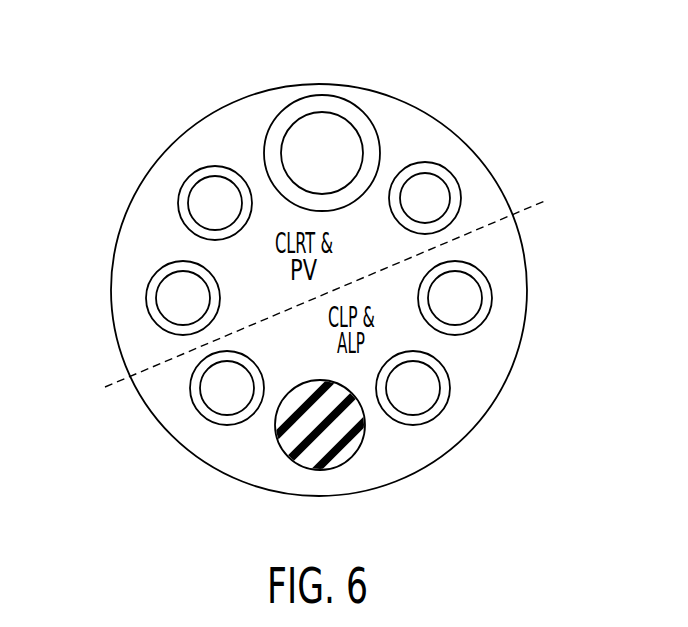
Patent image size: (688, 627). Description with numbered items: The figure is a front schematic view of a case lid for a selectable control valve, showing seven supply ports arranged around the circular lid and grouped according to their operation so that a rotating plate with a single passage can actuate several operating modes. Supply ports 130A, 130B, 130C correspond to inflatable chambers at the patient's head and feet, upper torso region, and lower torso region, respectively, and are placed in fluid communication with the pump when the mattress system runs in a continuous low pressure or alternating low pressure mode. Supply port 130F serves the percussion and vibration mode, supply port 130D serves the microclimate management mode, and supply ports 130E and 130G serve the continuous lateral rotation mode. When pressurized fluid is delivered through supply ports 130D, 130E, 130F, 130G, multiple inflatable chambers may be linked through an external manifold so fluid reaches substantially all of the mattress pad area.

The supply port 130A is at (483, 296).
The supply port 130B is at (440, 398).
The supply port 130C is at (215, 425).
The supply port 130D is at (150, 290).
The supply port 130E is at (186, 184).
The supply port 130F is at (336, 108).
The supply port 130G is at (450, 176).